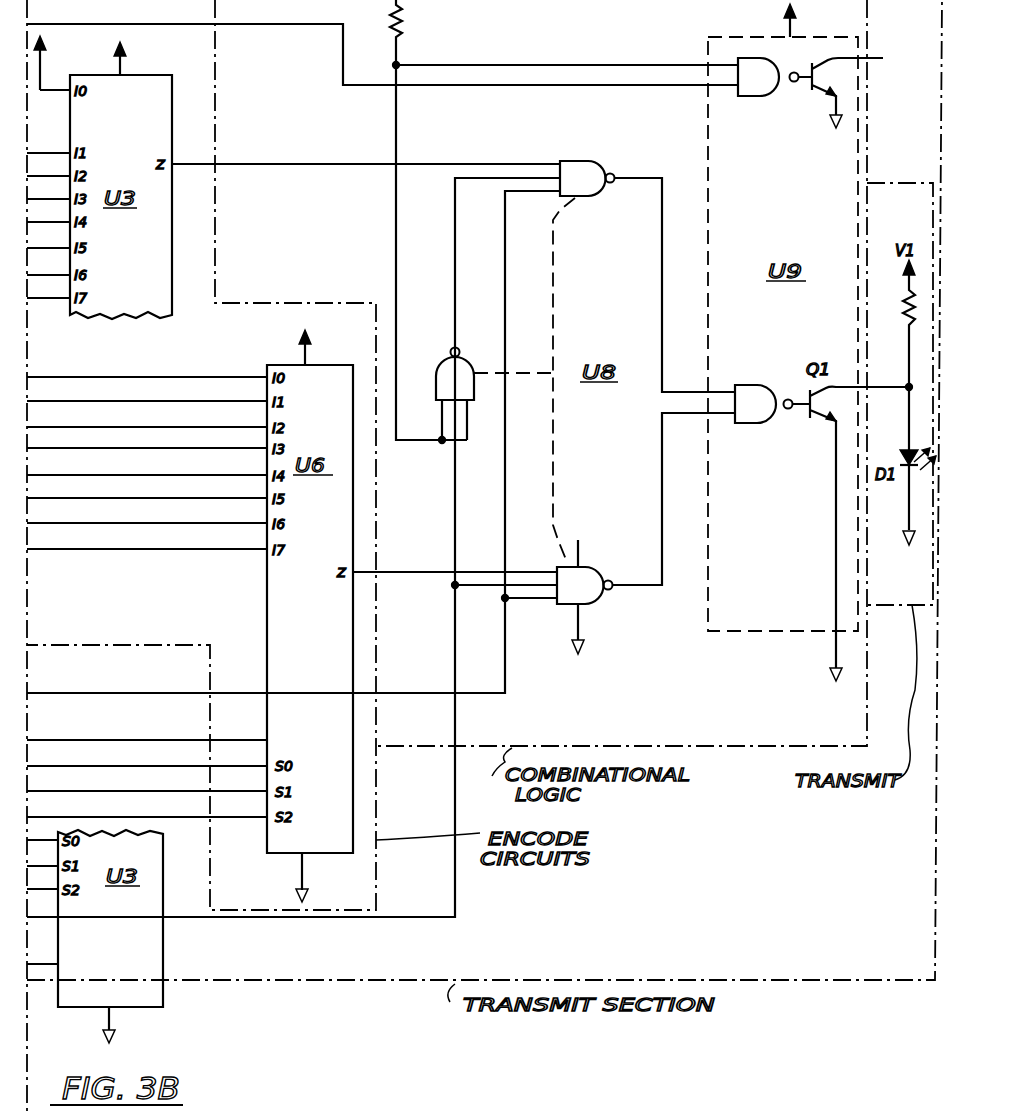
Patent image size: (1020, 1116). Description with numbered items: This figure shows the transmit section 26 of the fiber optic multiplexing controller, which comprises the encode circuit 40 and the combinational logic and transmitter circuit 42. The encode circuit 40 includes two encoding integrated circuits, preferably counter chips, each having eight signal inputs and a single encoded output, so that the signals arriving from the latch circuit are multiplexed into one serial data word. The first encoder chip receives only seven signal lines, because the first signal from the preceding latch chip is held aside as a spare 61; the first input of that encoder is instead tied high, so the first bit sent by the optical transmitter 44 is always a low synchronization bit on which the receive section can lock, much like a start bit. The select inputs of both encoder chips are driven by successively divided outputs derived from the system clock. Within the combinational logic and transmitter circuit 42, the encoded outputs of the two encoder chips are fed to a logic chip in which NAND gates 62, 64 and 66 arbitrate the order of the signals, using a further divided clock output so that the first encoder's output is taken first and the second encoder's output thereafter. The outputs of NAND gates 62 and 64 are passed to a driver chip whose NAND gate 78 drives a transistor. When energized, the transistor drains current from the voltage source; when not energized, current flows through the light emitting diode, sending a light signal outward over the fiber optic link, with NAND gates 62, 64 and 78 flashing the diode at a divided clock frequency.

The transmit section 26 is at (363, 984).
The encode circuit 40 is at (352, 896).
The combinational logic and transmitter circuit 42 is at (680, 706).
The optical transmitter 44 is at (912, 581).
The spare 61 is at (752, 50).
The NAND gate 62 is at (600, 160).
The NAND gate 64 is at (598, 566).
The NAND gate 66 is at (486, 345).
The NAND gate 78 is at (753, 424).